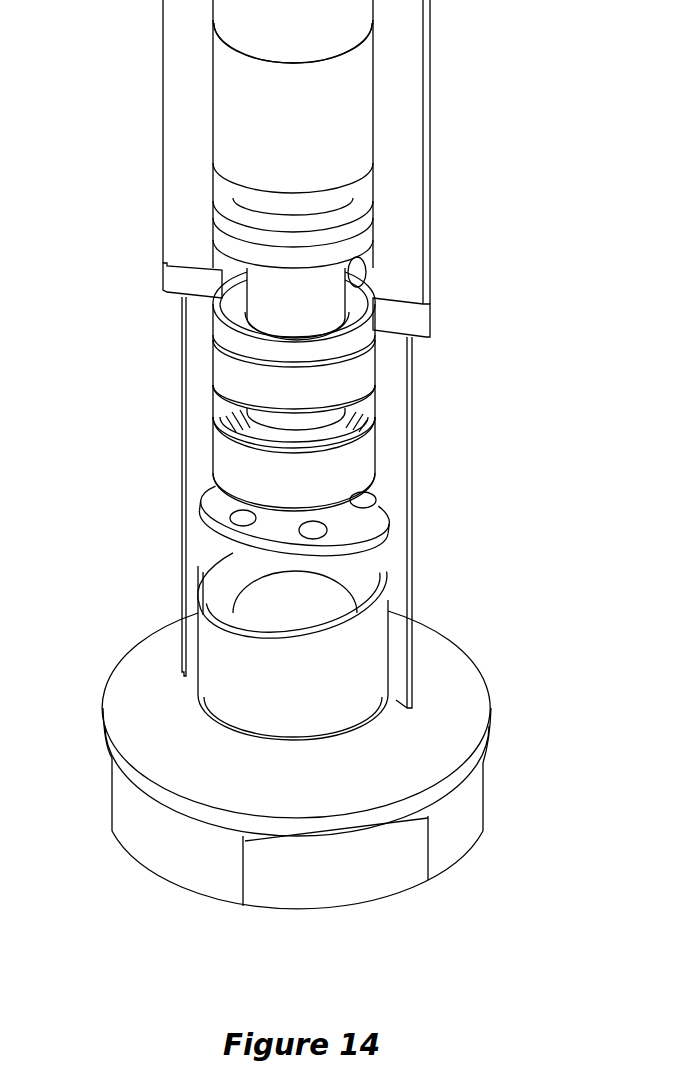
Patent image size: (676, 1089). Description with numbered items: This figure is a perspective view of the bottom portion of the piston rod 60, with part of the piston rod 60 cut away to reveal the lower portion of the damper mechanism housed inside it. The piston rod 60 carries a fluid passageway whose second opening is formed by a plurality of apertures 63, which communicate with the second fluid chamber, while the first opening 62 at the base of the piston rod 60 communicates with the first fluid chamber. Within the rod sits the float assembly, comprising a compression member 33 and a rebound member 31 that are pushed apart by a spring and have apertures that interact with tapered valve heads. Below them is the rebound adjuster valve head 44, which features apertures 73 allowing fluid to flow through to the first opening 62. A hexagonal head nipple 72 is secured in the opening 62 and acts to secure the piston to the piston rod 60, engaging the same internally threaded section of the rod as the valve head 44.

The piston rod 60 is at (405, 145).
The apertures 63 is at (380, 268).
The compression member 33 is at (240, 372).
The rebound member 31 is at (230, 460).
The apertures 73 is at (363, 502).
The valve head 44 is at (362, 542).
The first opening 62 is at (267, 598).
The hexagonal head nipple 72 is at (455, 808).